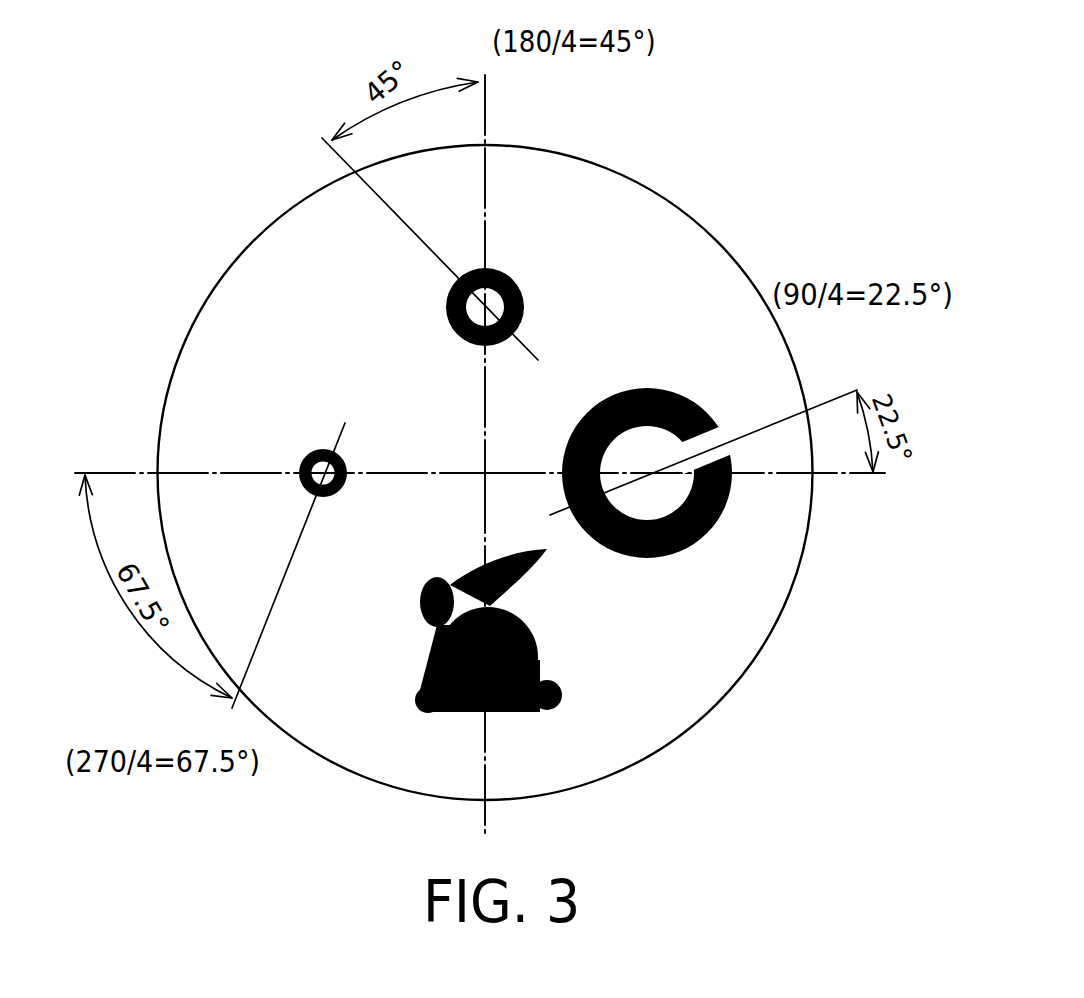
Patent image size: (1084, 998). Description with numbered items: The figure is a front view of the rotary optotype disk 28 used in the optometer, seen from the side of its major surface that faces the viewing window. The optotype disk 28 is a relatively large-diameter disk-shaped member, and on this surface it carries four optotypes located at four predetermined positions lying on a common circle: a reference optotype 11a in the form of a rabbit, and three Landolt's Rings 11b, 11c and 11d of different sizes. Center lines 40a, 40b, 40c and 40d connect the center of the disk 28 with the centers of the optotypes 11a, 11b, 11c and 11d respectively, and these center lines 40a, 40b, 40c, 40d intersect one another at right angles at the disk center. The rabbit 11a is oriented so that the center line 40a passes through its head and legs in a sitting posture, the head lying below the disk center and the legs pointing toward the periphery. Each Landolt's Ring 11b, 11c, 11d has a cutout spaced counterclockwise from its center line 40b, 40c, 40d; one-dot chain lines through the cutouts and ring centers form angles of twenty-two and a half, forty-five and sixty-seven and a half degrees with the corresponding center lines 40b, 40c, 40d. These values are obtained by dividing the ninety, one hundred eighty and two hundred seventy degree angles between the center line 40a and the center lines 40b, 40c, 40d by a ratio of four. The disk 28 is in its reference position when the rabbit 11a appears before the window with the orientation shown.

The rotary optotype disk 28 is at (700, 200).
The reference optotype 11a is at (530, 638).
The Landolt's Ring 11b is at (657, 558).
The Landolt's Ring 11c is at (513, 282).
The Landolt's Ring 11d is at (311, 452).
The center line 40a is at (488, 768).
The center line 40b is at (755, 478).
The center line 40c is at (485, 233).
The center line 40d is at (230, 468).